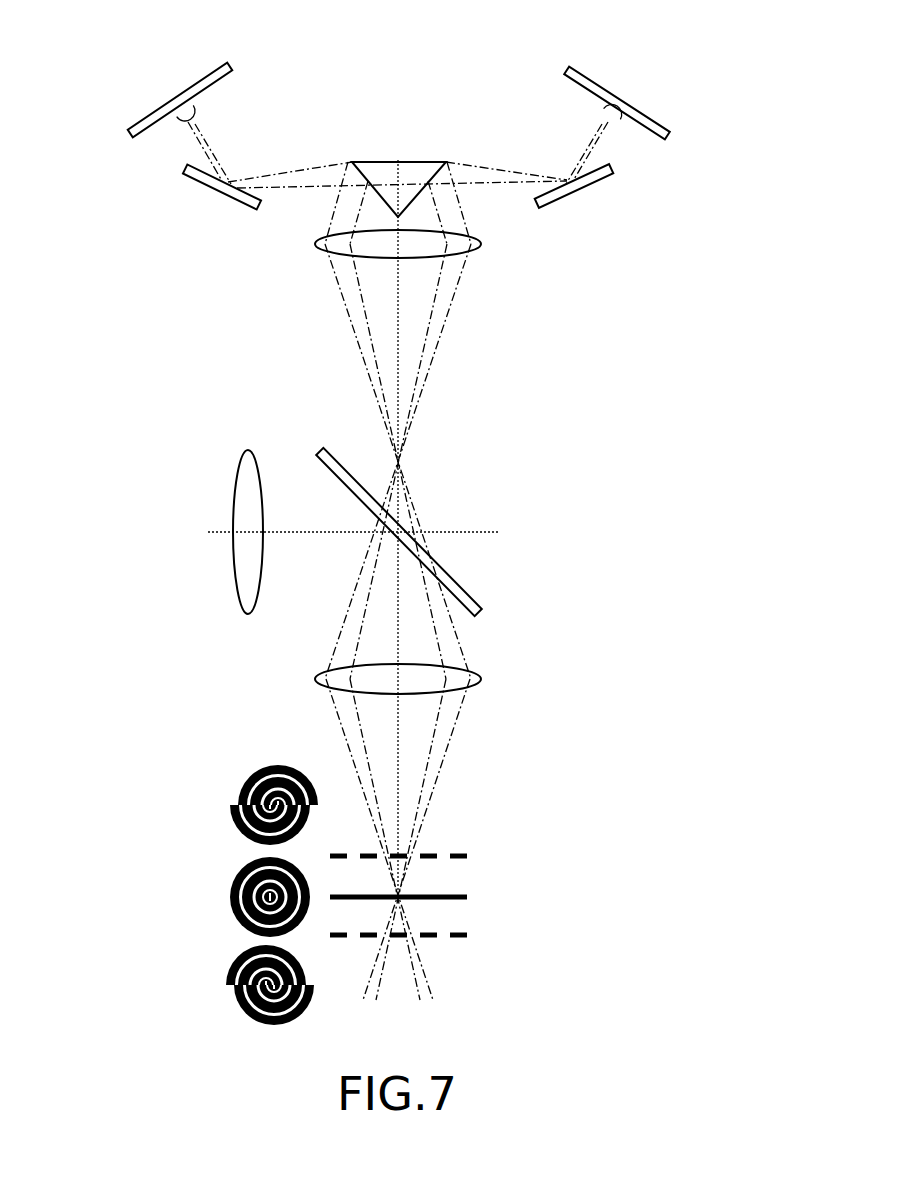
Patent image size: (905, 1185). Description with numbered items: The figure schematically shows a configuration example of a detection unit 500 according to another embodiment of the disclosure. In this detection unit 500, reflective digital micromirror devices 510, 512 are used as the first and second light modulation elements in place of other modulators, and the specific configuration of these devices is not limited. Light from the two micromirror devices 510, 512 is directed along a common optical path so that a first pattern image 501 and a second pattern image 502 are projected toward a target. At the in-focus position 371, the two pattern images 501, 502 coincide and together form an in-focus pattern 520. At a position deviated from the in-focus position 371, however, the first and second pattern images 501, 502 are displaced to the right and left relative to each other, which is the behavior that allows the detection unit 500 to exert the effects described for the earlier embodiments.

The detection unit 500 is at (396, 102).
The reflective digital micromirror device 510 is at (234, 207).
The reflective digital micromirror device 512 is at (571, 206).
The in-focus position 371 is at (457, 894).
The in-focus pattern 520 is at (227, 888).
The first pattern image 501 is at (242, 782).
The second pattern image 502 is at (233, 830).